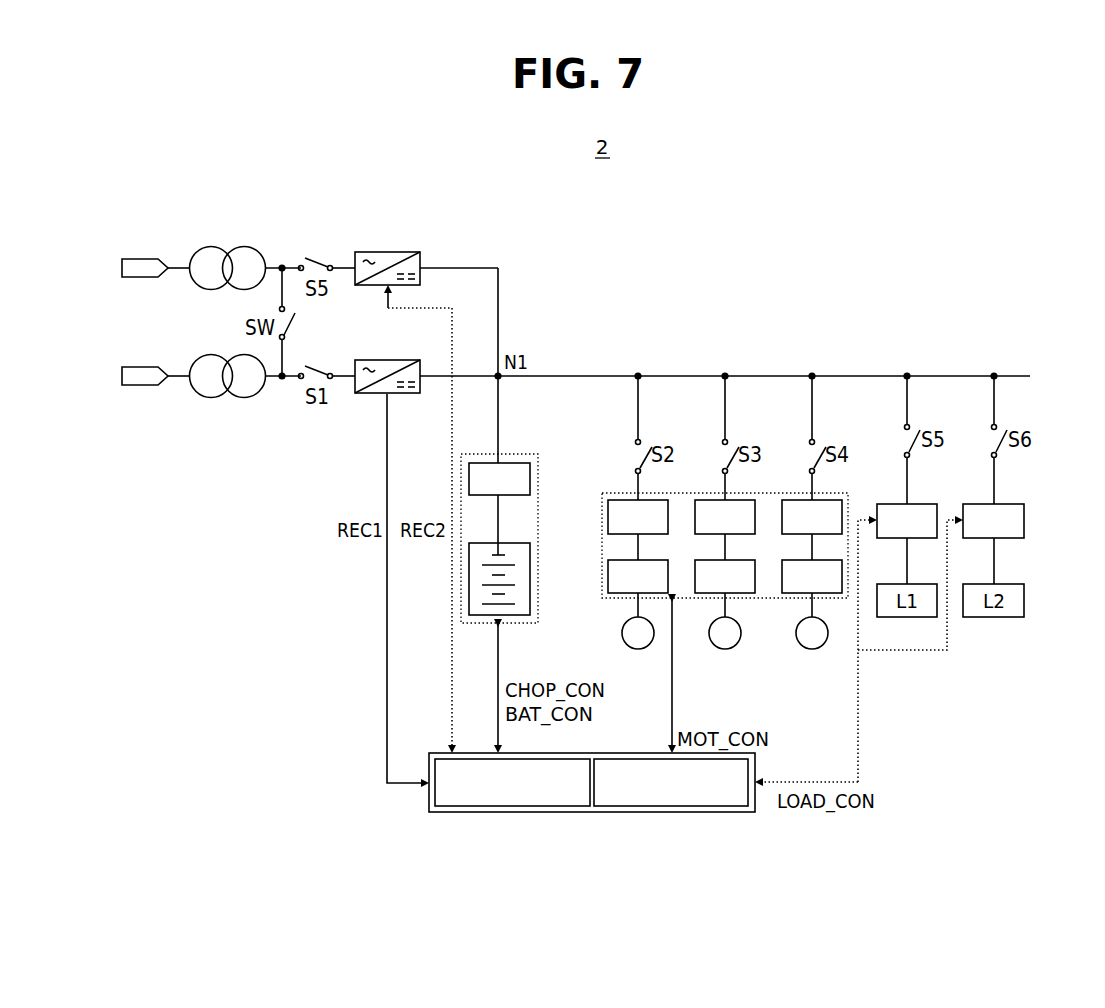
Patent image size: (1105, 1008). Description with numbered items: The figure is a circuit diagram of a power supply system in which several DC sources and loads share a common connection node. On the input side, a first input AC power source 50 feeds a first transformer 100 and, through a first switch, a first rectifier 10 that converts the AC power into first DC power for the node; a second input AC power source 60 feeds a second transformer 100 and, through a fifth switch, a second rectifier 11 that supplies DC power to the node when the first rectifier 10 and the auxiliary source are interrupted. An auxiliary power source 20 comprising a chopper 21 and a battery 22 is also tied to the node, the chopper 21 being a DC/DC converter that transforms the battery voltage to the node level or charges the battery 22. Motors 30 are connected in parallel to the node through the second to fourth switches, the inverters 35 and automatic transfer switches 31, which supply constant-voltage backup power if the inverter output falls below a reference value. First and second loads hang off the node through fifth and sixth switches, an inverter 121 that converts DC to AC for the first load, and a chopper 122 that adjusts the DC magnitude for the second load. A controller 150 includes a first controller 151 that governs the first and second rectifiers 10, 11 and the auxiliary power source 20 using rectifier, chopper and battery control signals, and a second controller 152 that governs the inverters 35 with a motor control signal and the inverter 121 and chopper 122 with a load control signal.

The second input AC power source 60 is at (139, 257).
The first input AC power source 50 is at (139, 366).
The first transformer 100 is at (210, 246).
The second rectifier 11 is at (388, 252).
The first rectifier 10 is at (388, 360).
The auxiliary power source 20 is at (476, 564).
The chopper 21 is at (469, 479).
The battery 22 is at (469, 578).
The inverters 35 is at (619, 492).
The automatic transfer switch 31 is at (602, 575).
The motors 30 is at (724, 658).
The inverter 121 is at (925, 503).
The chopper 122 is at (1012, 503).
The controller 150 is at (563, 801).
The first controller 151 is at (512, 812).
The second controller 152 is at (672, 812).